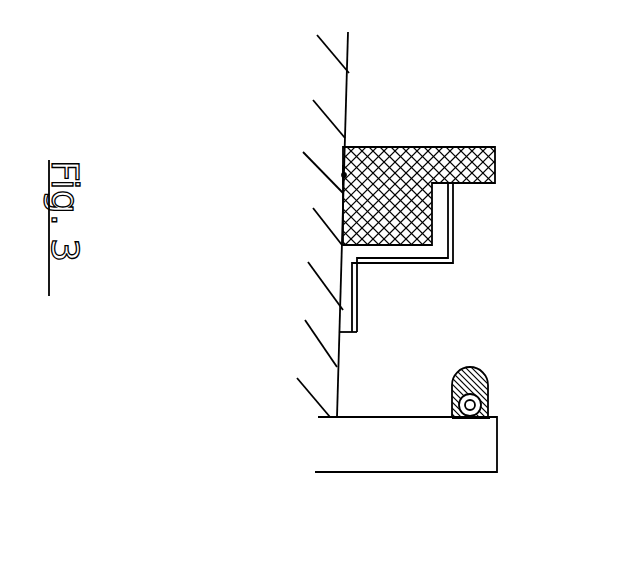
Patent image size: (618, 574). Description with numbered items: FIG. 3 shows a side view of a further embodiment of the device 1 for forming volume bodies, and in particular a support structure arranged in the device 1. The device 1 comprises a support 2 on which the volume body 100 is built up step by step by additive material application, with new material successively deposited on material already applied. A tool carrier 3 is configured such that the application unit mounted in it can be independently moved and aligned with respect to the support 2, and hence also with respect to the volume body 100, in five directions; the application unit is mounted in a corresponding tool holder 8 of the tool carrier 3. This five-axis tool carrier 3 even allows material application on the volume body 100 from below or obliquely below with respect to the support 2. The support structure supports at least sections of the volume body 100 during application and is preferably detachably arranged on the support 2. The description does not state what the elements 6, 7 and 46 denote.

The device 1 is at (478, 372).
The support 2 is at (307, 371).
The tool carrier 3 is at (405, 459).
The sealing block 6 is at (410, 148).
The mounting flange 7 is at (493, 397).
The tool holder 8 is at (486, 384).
The contact surface 46 is at (343, 175).
The volume body 100 is at (440, 223).